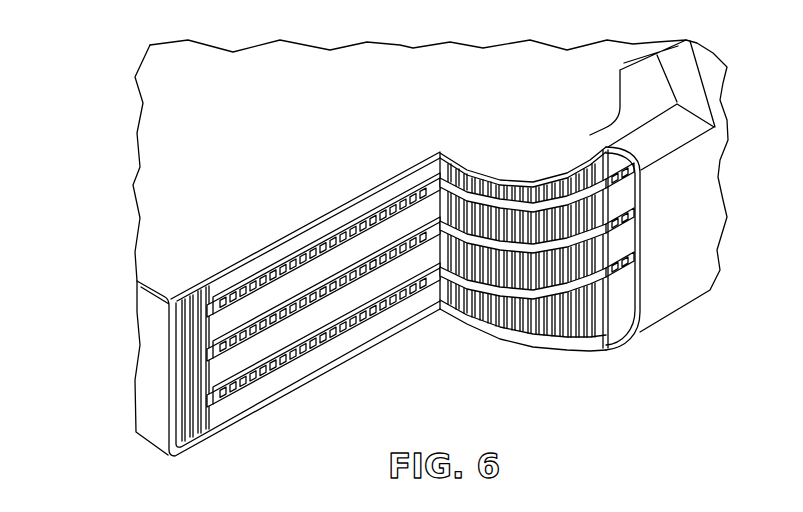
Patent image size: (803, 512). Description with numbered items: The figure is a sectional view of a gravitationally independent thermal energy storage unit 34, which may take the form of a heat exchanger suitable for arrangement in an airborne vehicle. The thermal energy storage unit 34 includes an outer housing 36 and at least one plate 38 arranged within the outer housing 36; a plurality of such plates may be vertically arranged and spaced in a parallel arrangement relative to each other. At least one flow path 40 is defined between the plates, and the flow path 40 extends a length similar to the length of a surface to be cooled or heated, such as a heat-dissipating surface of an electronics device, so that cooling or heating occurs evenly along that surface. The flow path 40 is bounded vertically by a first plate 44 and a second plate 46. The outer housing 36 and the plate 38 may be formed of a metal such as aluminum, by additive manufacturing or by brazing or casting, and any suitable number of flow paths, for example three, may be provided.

The thermal energy storage unit 34 is at (188, 86).
The outer housing 36 is at (182, 143).
The plate 38 is at (187, 392).
The flow path 40 is at (226, 328).
The first plate 44 is at (190, 343).
The second plate 46 is at (205, 303).